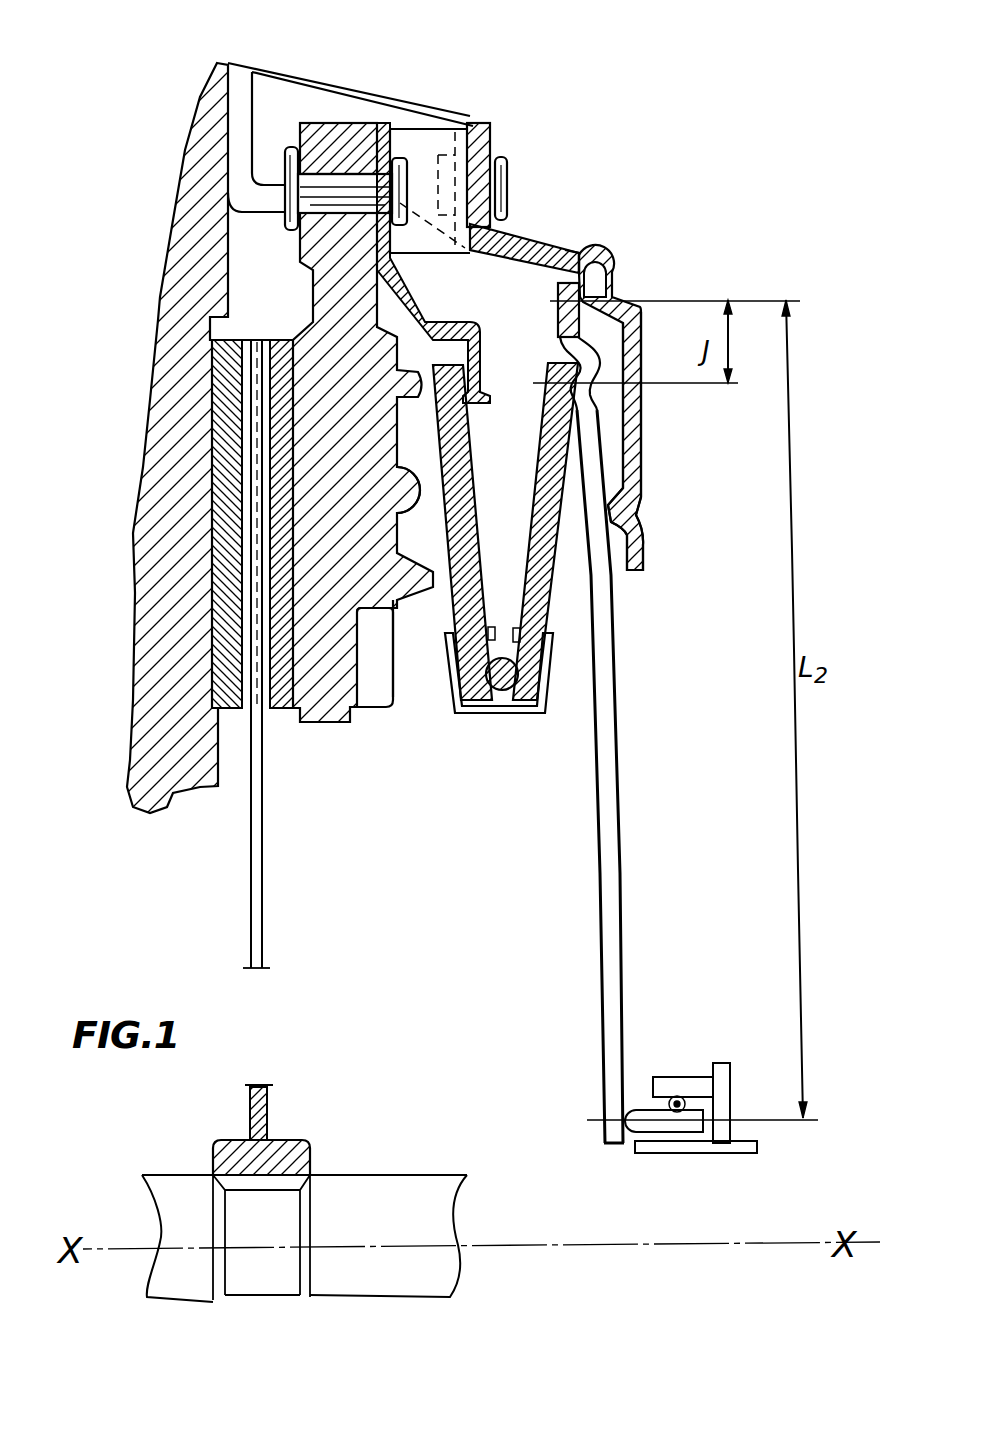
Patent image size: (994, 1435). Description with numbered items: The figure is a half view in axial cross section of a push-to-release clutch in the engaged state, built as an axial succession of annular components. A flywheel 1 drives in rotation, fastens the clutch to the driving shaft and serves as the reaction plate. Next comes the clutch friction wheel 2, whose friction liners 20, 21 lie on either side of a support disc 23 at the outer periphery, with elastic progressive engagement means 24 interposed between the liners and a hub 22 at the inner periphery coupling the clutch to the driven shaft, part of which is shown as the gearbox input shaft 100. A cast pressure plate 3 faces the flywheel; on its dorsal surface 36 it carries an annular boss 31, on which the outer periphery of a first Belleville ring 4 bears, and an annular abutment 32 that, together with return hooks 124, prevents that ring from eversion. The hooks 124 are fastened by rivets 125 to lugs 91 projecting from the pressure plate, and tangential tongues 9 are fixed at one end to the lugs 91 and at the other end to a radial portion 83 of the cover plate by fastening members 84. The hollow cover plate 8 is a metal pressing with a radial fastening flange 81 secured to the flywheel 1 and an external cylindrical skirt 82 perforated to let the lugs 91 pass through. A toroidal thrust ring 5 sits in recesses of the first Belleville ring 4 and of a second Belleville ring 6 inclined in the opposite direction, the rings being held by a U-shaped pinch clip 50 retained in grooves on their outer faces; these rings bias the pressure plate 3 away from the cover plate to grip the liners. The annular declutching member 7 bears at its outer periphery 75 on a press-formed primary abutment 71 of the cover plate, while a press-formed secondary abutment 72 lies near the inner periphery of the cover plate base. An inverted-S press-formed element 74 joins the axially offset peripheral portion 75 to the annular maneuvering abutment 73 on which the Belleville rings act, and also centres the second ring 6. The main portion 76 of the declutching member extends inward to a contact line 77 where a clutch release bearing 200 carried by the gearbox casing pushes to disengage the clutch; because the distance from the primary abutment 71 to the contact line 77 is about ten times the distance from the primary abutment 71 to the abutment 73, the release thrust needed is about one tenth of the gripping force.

The flywheel 1 is at (135, 663).
The clutch friction wheel 2 is at (224, 655).
The pressure plate 3 is at (256, 398).
The first Belleville ring 4 is at (450, 573).
The toroidal thrust ring 5 is at (503, 690).
The second Belleville ring 6 is at (553, 513).
The annular declutching member 7 is at (606, 661).
The hollow cover plate 8 is at (489, 152).
The tangential tongues 9 is at (412, 138).
The friction liner 20 is at (222, 412).
The friction liner 21 is at (283, 467).
The hub 22 is at (310, 1148).
The support disc 23 is at (265, 895).
The progressive engagement means 24 is at (262, 710).
The annular boss 31 is at (423, 397).
The annular abutment 32 is at (413, 590).
The dorsal surface 36 is at (415, 517).
The U-shaped pinch clip 50 is at (480, 713).
The annular primary abutment 71 is at (610, 277).
The annular secondary abutment 72 is at (637, 523).
The annular abutment 73 is at (547, 380).
The press-formed element 74 is at (590, 358).
The outer periphery 75 is at (580, 252).
The main portion 76 is at (605, 706).
The line of contact 77 is at (623, 1117).
The fastening means 81 is at (243, 117).
The external cylindrical skirt 82 is at (577, 228).
The radial portion 83 is at (490, 140).
The fastening members 84 is at (500, 160).
The lugs 91 is at (337, 123).
The input shaft of the gearbox 100 is at (380, 1172).
The return hook 124 is at (420, 293).
The rivets 125 is at (297, 188).
The clutch release bearing 200 is at (667, 1077).